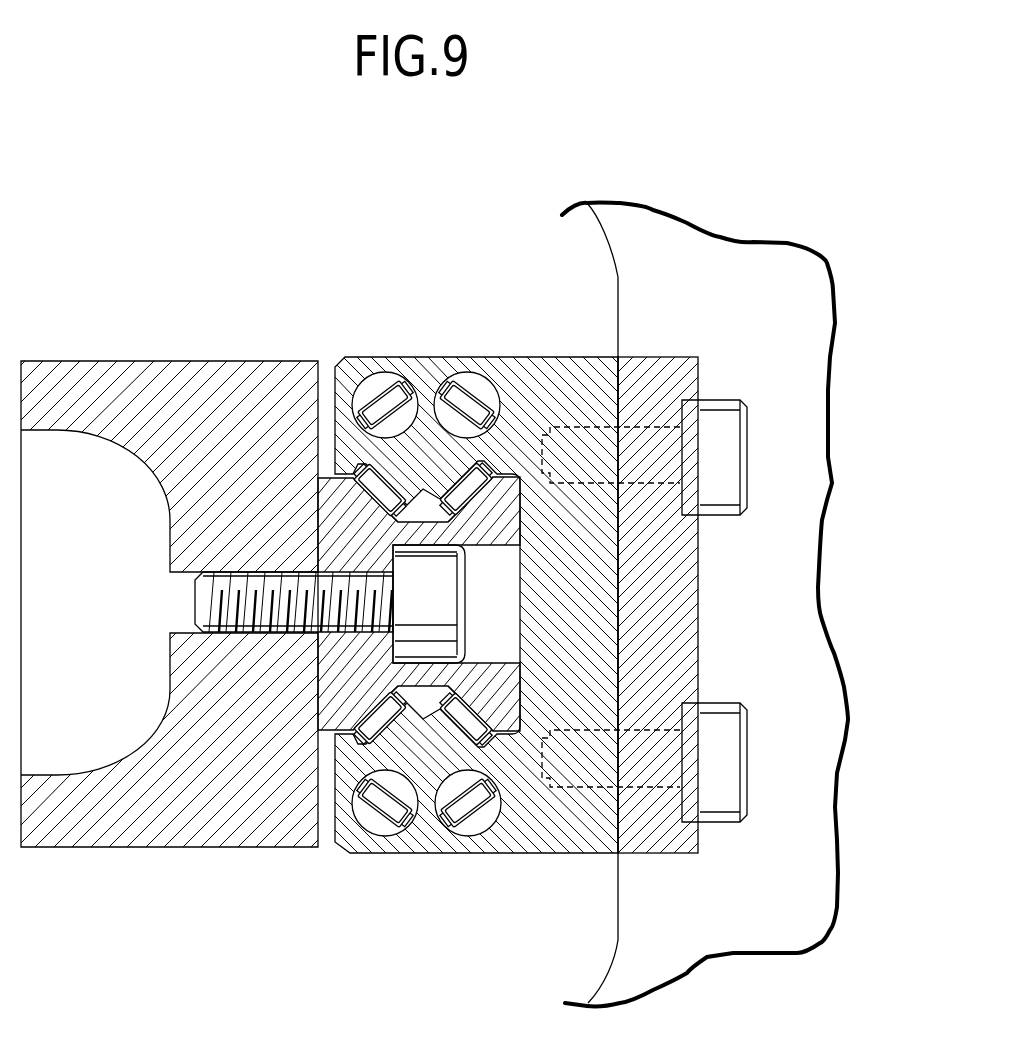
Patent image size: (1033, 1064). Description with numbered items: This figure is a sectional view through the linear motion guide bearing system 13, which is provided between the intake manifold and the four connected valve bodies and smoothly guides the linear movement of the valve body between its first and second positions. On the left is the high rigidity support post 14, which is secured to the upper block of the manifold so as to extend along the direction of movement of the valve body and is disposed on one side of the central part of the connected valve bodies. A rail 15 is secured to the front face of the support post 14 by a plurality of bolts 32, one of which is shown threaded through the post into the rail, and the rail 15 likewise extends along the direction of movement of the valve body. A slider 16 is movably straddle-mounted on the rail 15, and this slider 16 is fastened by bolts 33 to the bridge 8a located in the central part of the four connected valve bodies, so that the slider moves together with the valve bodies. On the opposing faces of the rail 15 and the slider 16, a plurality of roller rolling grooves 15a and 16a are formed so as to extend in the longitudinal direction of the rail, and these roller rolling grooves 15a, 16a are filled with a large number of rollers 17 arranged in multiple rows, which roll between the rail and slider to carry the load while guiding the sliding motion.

The bridge 8a is at (680, 377).
The linear motion guide bearing system 13 is at (435, 583).
The support post 14 is at (95, 387).
The rail 15 is at (357, 498).
The roller rolling groove 15a is at (383, 498).
The slider 16 is at (563, 377).
The roller rolling groove 16a is at (383, 478).
The roller 17 is at (402, 466).
The bolt 32 is at (440, 600).
The bolt 33 is at (717, 457).